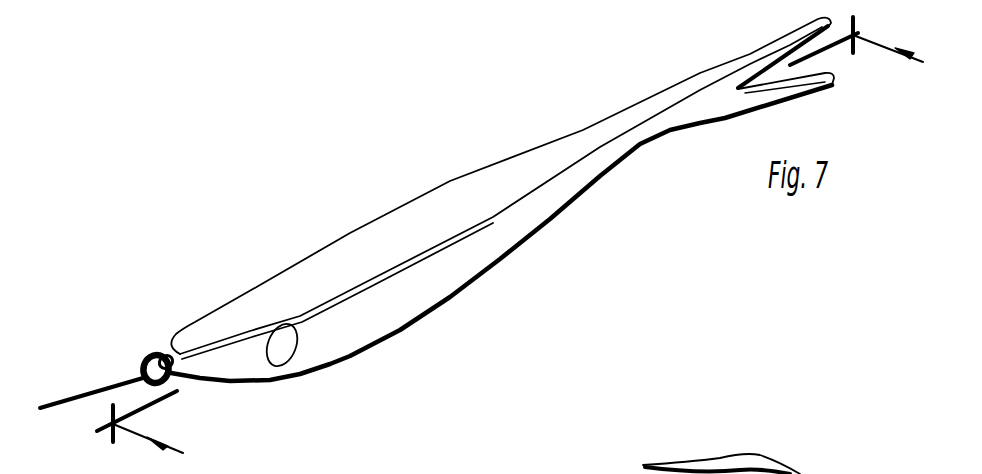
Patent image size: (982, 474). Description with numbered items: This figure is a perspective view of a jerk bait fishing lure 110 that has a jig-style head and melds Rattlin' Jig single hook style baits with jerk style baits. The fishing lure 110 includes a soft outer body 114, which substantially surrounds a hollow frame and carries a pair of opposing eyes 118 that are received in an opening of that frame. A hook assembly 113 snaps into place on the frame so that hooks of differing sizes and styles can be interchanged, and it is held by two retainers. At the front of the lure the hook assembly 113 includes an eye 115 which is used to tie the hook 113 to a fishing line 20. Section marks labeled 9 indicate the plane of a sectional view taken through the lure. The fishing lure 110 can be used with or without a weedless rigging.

The jerk bait fishing lure 110 is at (290, 208).
The hook assembly 113 is at (488, 186).
The soft outer body 114 is at (307, 257).
The eye 115 is at (152, 352).
The eyes 118 is at (282, 333).
The fishing line 20 is at (131, 378).
The section line 9- 9 is at (510, 237).